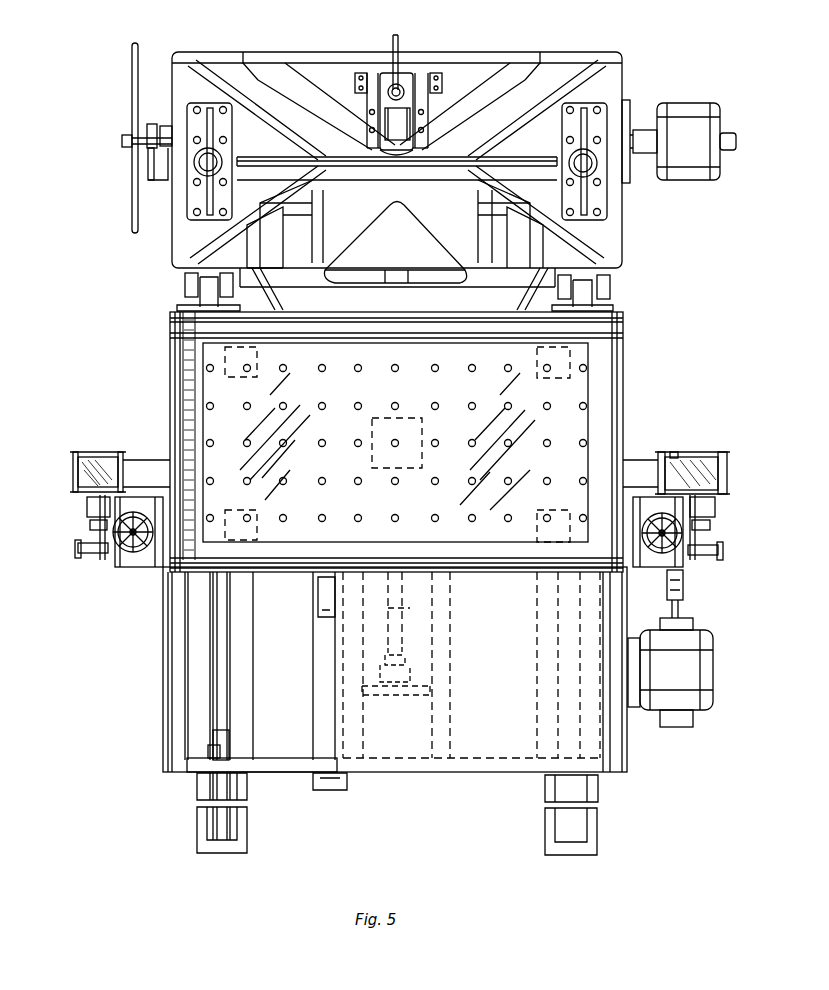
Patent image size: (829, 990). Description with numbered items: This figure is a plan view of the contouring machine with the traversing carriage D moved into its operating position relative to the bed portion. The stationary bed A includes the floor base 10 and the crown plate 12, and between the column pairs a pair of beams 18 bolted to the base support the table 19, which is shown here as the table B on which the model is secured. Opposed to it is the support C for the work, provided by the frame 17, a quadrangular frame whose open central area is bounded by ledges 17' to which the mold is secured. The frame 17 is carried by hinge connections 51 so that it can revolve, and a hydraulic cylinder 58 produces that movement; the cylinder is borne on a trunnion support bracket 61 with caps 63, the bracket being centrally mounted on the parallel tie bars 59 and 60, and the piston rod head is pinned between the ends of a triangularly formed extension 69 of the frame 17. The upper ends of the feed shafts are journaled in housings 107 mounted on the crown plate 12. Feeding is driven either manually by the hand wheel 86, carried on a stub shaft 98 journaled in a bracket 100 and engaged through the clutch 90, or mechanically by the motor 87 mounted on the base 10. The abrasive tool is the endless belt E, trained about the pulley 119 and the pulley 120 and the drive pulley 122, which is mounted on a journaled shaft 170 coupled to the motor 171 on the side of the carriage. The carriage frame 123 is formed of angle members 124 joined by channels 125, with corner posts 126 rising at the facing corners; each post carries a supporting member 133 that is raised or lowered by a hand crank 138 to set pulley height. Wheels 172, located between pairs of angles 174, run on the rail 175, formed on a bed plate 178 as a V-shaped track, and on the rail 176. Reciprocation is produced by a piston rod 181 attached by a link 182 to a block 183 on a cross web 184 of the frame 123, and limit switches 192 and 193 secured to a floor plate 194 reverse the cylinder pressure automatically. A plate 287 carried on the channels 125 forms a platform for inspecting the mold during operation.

The stationary bed A is at (272, 86).
The table B is at (222, 419).
The support for the work C is at (173, 442).
The traversing carriage D is at (171, 622).
The endless belt E is at (78, 475).
The floor base 10 is at (268, 262).
The crown plate 12 is at (517, 103).
The frame 17 is at (375, 442).
The ledges 17' is at (394, 456).
The beams 18 is at (296, 226).
The table 19 is at (567, 416).
The hinge connections 51 is at (183, 287).
The hydraulic cylinder 58 is at (430, 100).
The tie bar 59 is at (318, 88).
The tie bar 60 is at (420, 150).
The trunnion support bracket 61 is at (372, 146).
The caps 63 is at (368, 120).
The triangularly formed extension 69 is at (543, 271).
The hand wheel 86 is at (133, 75).
The motor 87 is at (697, 130).
The clutch 90 is at (160, 125).
The stub shaft 98 is at (128, 148).
The bracket 100 is at (161, 170).
The housing 107 is at (205, 166).
The pulley 119 is at (100, 452).
The pulley 120 is at (704, 454).
The drive pulley 122 is at (670, 452).
The frame 123 is at (178, 666).
The angle members 124 is at (178, 724).
The channels 125 is at (280, 765).
The corner posts 126 is at (140, 579).
The supporting member 133 is at (100, 510).
The hand crank 138 is at (103, 556).
The journaled shaft 170 is at (690, 576).
The motor 171 is at (690, 668).
The wheels 172 is at (210, 750).
The angles 174 is at (200, 697).
The rail 175 is at (217, 815).
The rail 176 is at (565, 823).
The bed plate 178 is at (202, 840).
The piston rod 181 is at (420, 612).
The link 182 is at (410, 650).
The block 183 is at (415, 677).
The cross web 184 is at (435, 698).
The limit switch 192 is at (325, 598).
The limit switch 193 is at (325, 784).
The floor plate 194 is at (322, 668).
The plate 287 is at (416, 768).